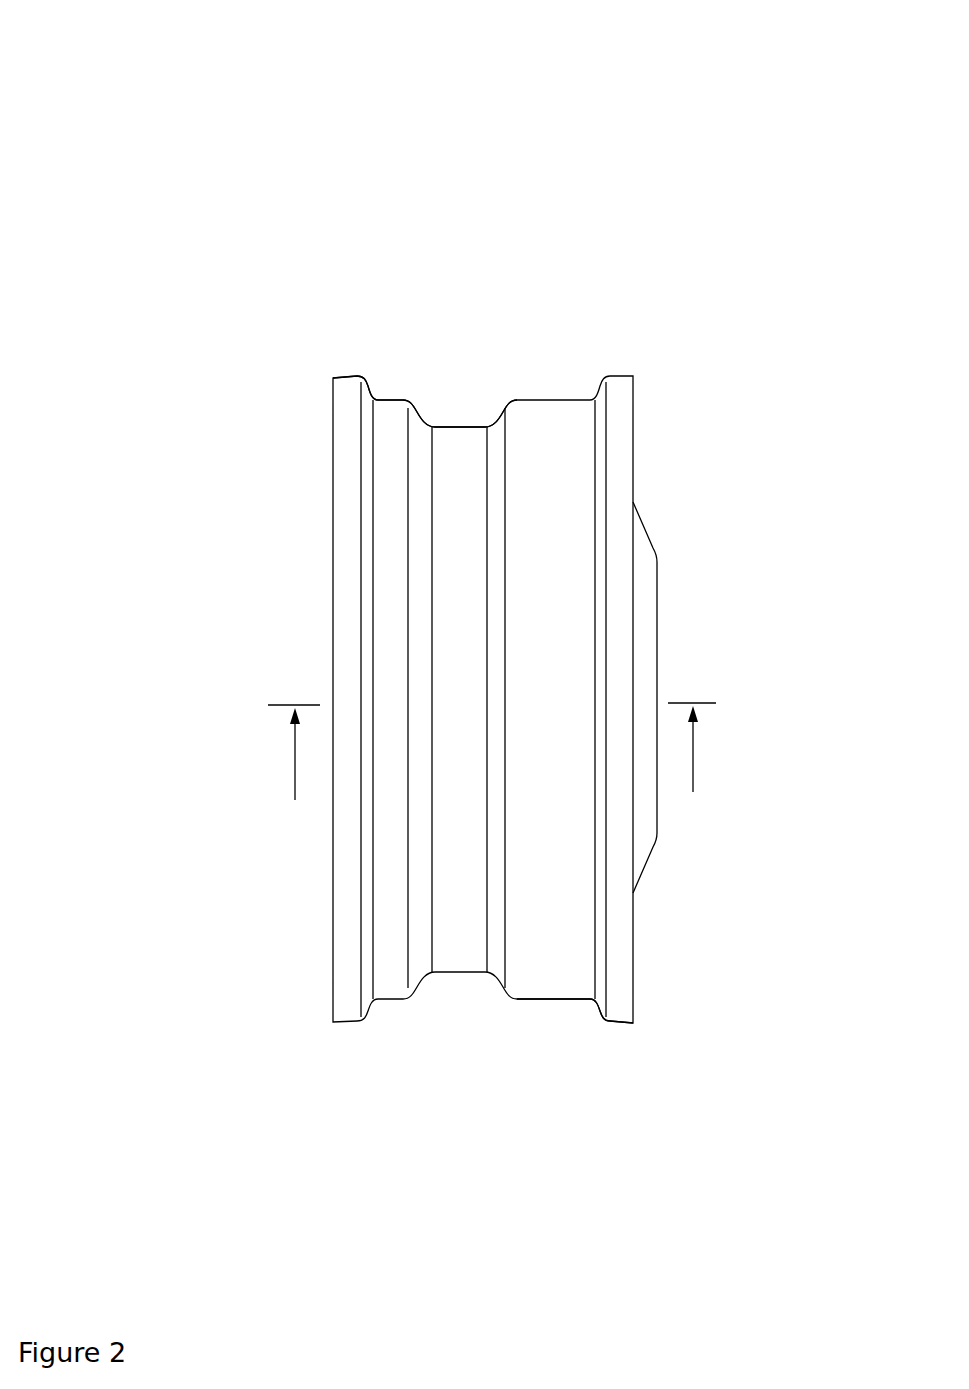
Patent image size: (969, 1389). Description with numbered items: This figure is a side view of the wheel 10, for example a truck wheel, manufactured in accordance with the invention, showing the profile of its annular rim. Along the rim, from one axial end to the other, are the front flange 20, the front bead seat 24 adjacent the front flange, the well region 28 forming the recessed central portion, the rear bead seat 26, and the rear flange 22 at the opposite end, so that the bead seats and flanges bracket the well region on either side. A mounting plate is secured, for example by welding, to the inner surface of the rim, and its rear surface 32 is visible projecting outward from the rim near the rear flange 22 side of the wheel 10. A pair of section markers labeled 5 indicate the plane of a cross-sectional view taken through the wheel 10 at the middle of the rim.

The wheel 10 is at (776, 166).
The front flange 20 is at (349, 376).
The rear flange 22 is at (619, 1022).
The front bead seat 24 is at (394, 400).
The rear bead seat 26 is at (552, 999).
The well region 28 is at (462, 406).
The rear surface 32 is at (643, 563).
The section line 5- 5 is at (492, 769).